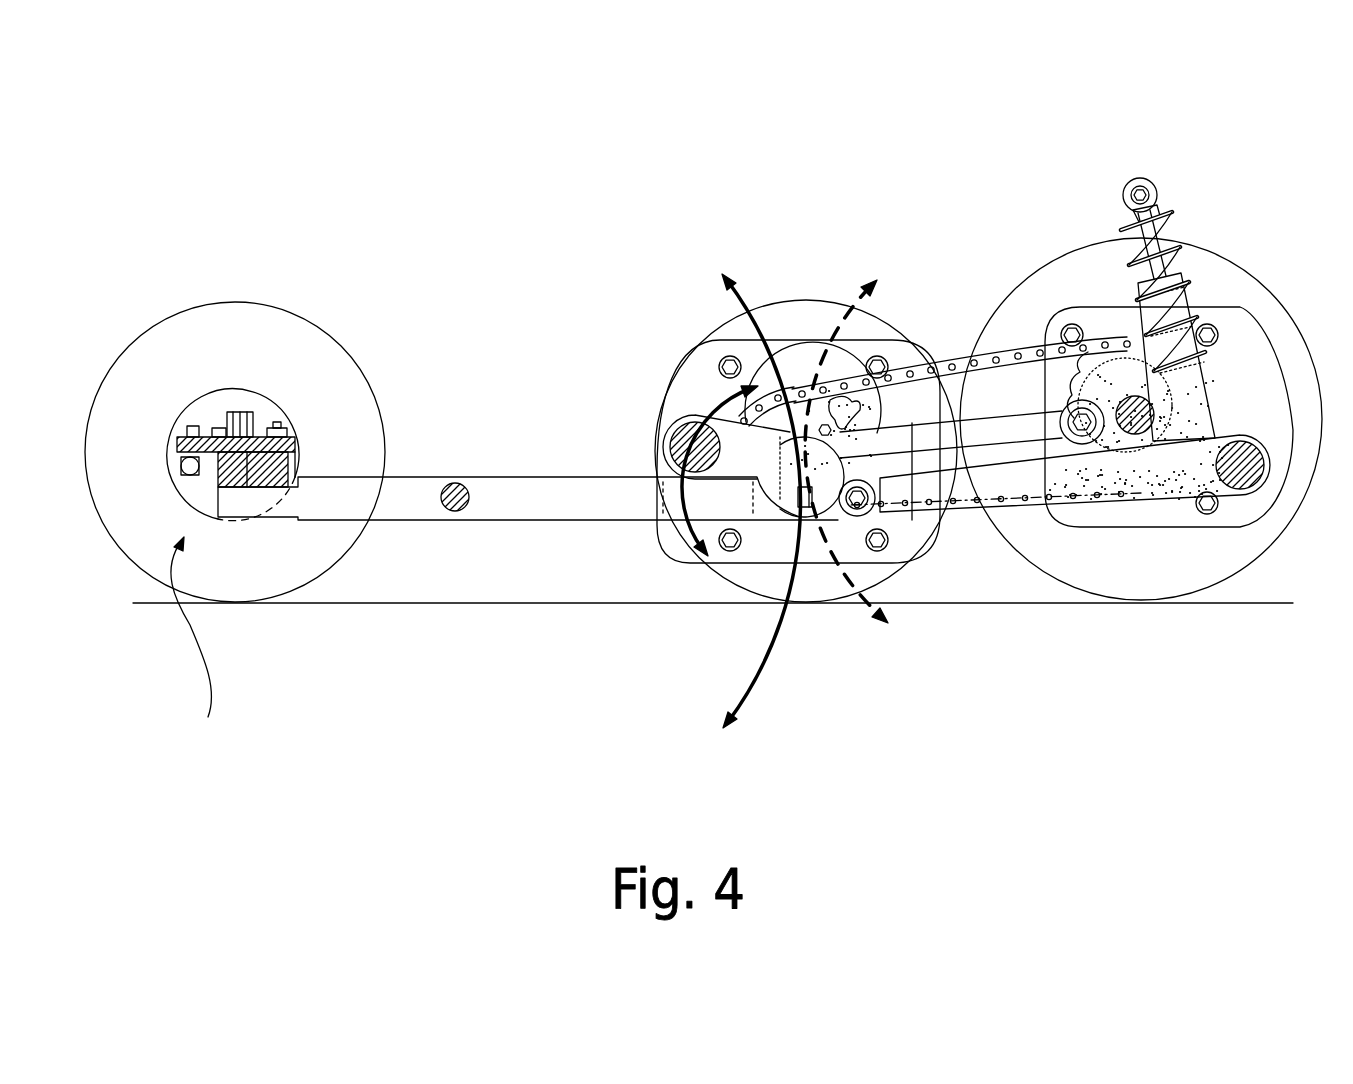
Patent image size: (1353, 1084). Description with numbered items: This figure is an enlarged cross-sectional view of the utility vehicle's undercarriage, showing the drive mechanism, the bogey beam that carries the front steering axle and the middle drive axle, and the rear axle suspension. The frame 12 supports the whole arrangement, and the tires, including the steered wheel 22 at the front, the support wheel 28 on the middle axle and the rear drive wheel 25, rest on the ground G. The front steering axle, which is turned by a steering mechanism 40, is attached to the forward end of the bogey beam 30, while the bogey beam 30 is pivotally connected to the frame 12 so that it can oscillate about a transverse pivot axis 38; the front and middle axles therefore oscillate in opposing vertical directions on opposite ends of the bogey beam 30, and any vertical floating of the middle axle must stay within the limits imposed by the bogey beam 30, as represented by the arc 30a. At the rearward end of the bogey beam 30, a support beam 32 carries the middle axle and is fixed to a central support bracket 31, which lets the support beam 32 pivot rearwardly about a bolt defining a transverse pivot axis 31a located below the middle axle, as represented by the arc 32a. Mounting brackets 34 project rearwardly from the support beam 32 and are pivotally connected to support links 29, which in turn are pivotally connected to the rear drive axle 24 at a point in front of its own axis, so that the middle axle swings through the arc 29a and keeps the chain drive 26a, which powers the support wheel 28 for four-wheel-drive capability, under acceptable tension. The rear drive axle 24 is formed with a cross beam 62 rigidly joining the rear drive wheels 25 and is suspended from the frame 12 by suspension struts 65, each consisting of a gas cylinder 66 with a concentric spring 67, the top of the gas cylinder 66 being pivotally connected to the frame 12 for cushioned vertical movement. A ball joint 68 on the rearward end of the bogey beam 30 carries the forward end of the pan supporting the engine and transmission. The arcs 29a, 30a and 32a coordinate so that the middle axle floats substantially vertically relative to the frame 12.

The frame 12 is at (1150, 177).
The steered wheel 22 is at (323, 327).
The rear drive axle 24 is at (1293, 410).
The rear drive wheel 25 is at (1045, 267).
The chain drive 26a is at (1035, 352).
The support wheel 28 is at (888, 330).
The support link 29 is at (985, 507).
The arc 29a is at (822, 606).
The bogey beam 30 is at (528, 575).
The arc 30a is at (758, 682).
The central support bracket 31 is at (793, 478).
The transverse pivot axis 31a is at (790, 500).
The support beam 32 is at (680, 423).
The arc 32a is at (668, 492).
The mounting bracket 34 is at (797, 433).
The transverse pivot axis 38 is at (453, 482).
The steering mechanism 40 is at (193, 649).
The cross beam 62 is at (1289, 480).
The suspension strut 65 is at (1204, 190).
The gas cylinder 66 is at (1205, 308).
The concentric spring 67 is at (1195, 250).
The ball joint 68 is at (912, 520).
The ground G is at (347, 603).